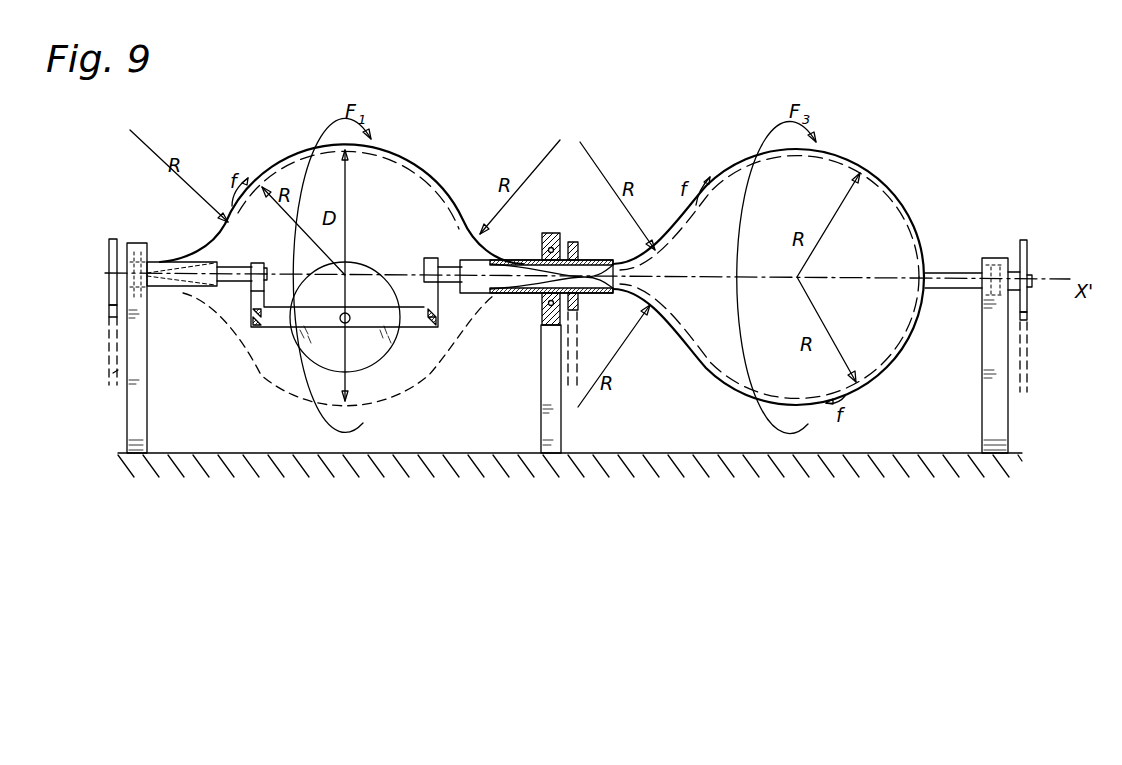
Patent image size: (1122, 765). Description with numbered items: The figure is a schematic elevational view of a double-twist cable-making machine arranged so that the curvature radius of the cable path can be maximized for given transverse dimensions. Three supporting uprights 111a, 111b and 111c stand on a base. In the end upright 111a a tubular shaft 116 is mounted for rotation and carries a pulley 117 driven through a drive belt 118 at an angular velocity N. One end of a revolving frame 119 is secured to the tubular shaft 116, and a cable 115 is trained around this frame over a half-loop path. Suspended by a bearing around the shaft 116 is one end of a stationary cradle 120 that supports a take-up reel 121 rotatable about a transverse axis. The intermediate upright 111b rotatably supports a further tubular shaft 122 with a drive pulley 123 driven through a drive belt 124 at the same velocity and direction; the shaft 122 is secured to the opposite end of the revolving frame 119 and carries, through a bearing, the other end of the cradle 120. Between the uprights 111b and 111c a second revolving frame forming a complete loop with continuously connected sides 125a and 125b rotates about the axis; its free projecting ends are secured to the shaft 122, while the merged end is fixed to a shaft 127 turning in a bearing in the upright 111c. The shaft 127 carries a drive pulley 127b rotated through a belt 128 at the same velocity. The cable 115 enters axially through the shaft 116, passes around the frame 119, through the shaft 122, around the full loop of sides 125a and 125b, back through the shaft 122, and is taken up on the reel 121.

The end supporting upright 111a is at (138, 423).
The intermediate supporting upright 111b is at (541, 392).
The end supporting upright 111c is at (982, 440).
The cable 115 is at (412, 168).
The tubular shaft 116 is at (194, 284).
The pulley 117 is at (119, 247).
The drive belt 118 is at (118, 372).
The revolving frame 119 is at (432, 189).
The stationary cradle 120 is at (279, 320).
The take-up reel 121 is at (389, 348).
The tubular shaft 122 is at (517, 260).
The drive pulley 123 is at (578, 256).
The drive belt 124 is at (573, 364).
The side of second revolving frame 125a is at (778, 158).
The side of second revolving frame 125b is at (703, 356).
The shaft 127 is at (940, 277).
The drive pulley 127b is at (1027, 253).
The belt 128 is at (1022, 387).